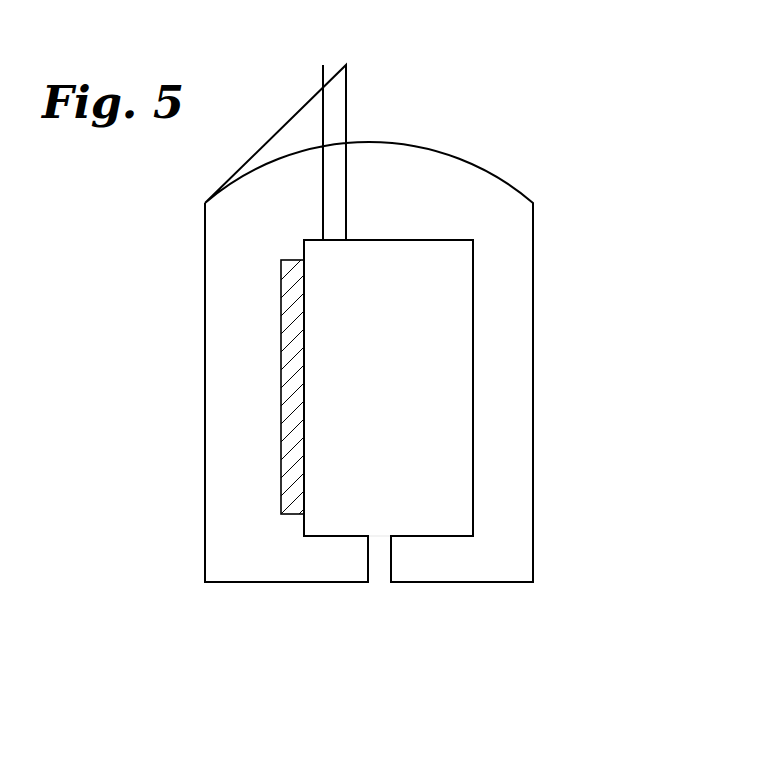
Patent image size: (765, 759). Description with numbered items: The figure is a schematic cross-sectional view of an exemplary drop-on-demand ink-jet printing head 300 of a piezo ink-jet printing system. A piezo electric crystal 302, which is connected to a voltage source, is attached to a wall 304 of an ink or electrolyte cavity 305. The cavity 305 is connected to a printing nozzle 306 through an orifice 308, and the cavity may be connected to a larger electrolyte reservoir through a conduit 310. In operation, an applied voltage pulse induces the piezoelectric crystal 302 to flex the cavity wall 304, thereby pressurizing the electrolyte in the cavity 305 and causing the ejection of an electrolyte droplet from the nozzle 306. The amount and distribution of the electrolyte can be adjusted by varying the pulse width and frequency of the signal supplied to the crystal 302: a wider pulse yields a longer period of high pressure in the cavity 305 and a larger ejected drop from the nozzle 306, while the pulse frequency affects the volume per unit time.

The gas generator assembly 300 is at (370, 348).
The piezo electric crystal 302 is at (292, 347).
The wall 304 is at (303, 247).
The ink cavity 305 is at (430, 362).
The printing nozzle 306 is at (381, 578).
The orifice 308 is at (389, 550).
The conduit 310 is at (336, 80).